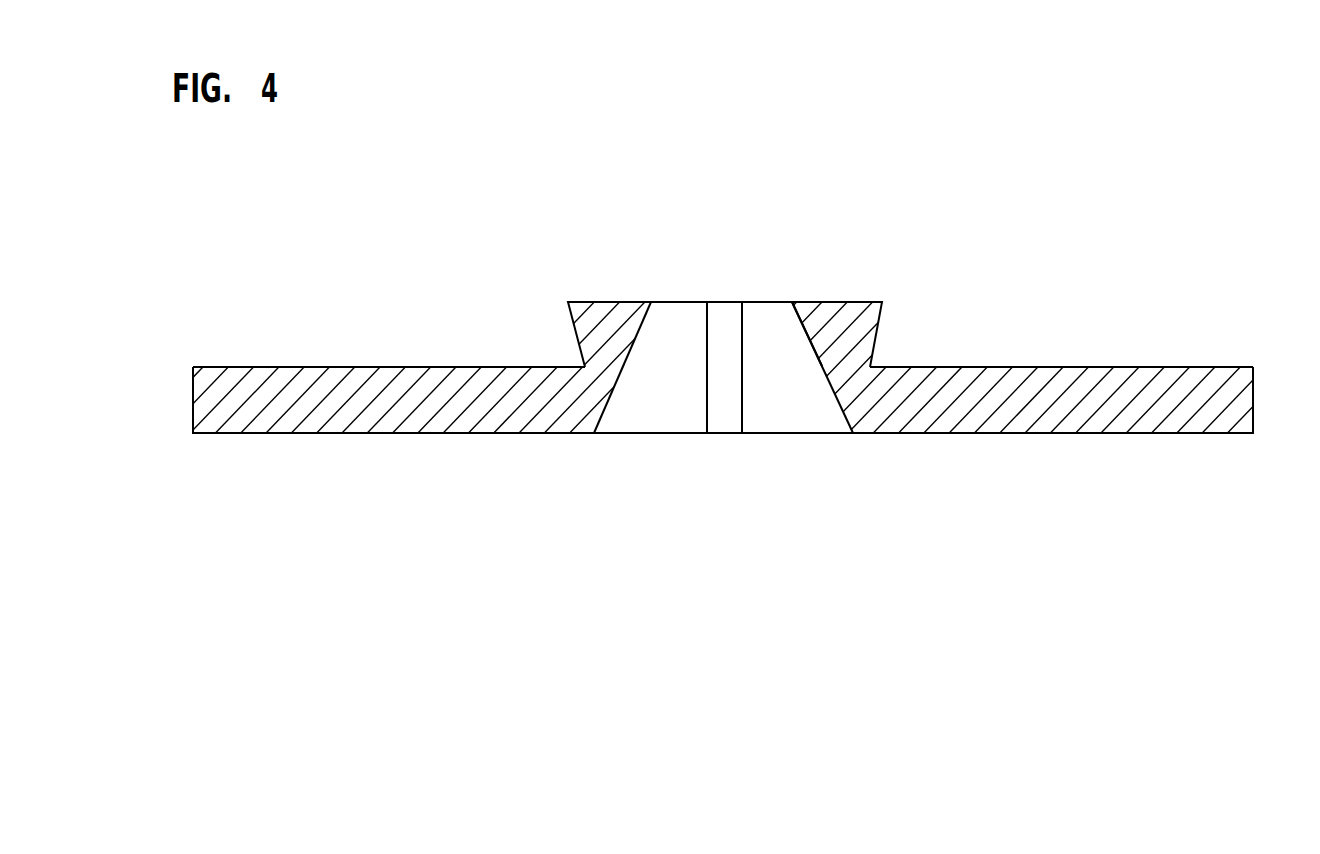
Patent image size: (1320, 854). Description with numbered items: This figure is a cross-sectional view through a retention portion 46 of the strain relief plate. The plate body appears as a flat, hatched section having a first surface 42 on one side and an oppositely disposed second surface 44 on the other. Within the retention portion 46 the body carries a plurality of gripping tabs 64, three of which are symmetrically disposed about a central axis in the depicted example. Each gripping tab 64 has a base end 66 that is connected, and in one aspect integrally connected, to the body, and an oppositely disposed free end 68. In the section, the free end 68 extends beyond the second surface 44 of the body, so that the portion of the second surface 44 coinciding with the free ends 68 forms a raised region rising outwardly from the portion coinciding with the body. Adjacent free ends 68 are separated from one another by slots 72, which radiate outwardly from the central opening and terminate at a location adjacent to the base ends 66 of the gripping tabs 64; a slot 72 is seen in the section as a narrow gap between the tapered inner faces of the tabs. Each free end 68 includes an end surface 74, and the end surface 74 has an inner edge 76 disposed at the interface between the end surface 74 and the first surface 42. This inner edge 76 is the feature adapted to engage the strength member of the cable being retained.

The first surface 42 is at (935, 433).
The second surface 44 is at (948, 367).
The retention portion 46 is at (323, 438).
The gripping tab 64 is at (612, 414).
The base end 66 is at (842, 408).
The free end 68 is at (666, 317).
The slot 72 is at (725, 417).
The end surface 74 is at (813, 302).
The inner edge 76 is at (795, 302).